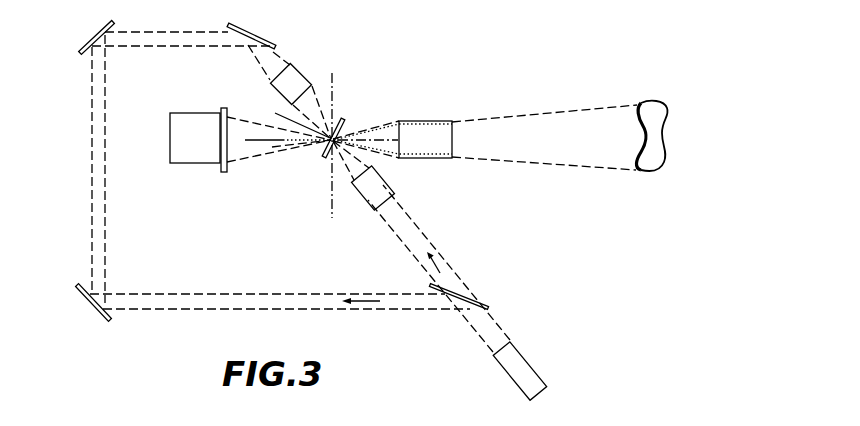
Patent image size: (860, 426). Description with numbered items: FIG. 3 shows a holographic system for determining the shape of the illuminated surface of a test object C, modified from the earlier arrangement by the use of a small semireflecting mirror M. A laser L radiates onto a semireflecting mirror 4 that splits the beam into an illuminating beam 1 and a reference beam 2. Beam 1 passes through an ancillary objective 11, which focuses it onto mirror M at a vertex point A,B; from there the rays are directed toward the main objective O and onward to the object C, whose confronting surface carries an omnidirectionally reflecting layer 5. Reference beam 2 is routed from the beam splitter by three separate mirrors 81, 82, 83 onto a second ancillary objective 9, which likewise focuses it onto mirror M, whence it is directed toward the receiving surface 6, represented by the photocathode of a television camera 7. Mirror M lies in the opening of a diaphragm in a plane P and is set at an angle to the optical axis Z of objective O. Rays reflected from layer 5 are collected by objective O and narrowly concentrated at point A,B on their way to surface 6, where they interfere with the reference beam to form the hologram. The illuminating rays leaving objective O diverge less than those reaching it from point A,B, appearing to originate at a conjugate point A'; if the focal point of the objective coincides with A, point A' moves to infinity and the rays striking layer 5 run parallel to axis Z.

The illuminating beam 1 is at (420, 237).
The reference beam 2 is at (167, 302).
The semireflecting mirror 4 is at (460, 293).
The omnidirectionally reflecting layer 5 is at (644, 142).
The receiving surface 6 is at (223, 108).
The television camera 7 is at (182, 120).
The mirror 81 is at (92, 308).
The mirror 82 is at (82, 46).
The mirror 83 is at (250, 34).
The ancillary objective 9 is at (303, 75).
The ancillary objective 11 is at (368, 212).
The vertex point A,B is at (290, 117).
The conjugate point A' is at (286, 170).
The test object C is at (662, 122).
The laser L is at (530, 367).
The semireflecting mirror M is at (324, 157).
The main objective O is at (433, 159).
The plane of diaphragm P is at (333, 78).
The optical axis Z is at (250, 140).